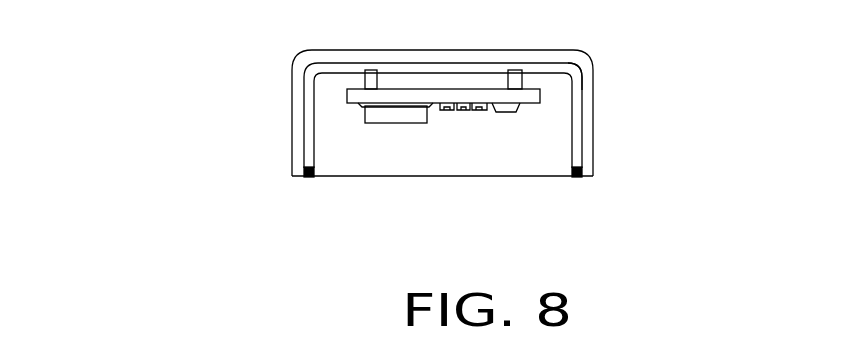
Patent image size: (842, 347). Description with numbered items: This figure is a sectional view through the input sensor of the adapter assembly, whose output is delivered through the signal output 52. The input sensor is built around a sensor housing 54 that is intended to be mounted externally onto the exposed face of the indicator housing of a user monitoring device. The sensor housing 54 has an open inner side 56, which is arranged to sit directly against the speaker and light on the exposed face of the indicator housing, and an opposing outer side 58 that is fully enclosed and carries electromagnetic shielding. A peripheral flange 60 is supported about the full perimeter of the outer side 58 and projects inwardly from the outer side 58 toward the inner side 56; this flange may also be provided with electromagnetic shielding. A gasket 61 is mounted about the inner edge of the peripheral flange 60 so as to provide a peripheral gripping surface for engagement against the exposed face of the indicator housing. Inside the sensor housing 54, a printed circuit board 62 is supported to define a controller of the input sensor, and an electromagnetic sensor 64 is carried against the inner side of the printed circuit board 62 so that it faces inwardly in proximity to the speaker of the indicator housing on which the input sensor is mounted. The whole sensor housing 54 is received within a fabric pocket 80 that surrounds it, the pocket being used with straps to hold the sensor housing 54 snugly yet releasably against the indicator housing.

The signal output 52 is at (140, 113).
The sensor housing 54 is at (577, 80).
The inner side 56 is at (450, 158).
The outer side 58 is at (426, 72).
The peripheral flange 60 is at (577, 105).
The gasket 61 is at (303, 173).
The printed circuit board 62 is at (473, 100).
The electromagnetic sensor 64 is at (402, 118).
The fabric pocket 80 is at (295, 92).